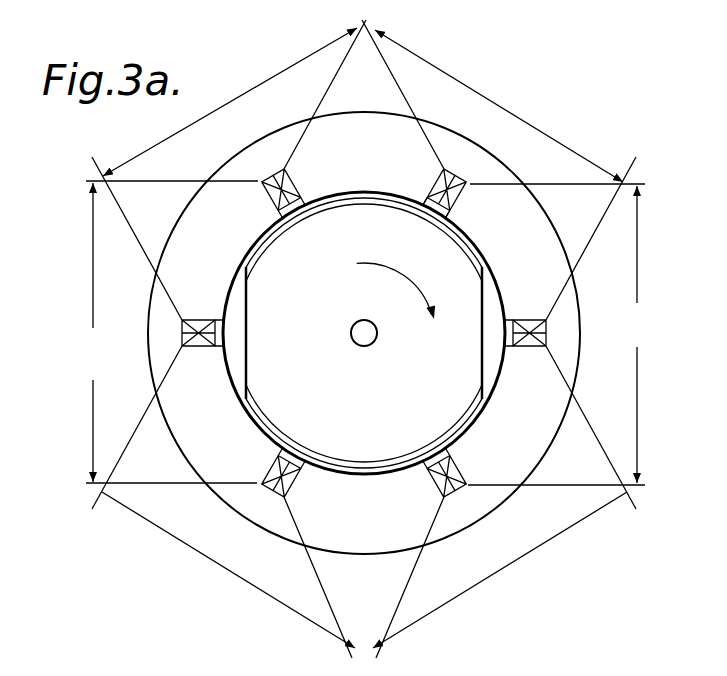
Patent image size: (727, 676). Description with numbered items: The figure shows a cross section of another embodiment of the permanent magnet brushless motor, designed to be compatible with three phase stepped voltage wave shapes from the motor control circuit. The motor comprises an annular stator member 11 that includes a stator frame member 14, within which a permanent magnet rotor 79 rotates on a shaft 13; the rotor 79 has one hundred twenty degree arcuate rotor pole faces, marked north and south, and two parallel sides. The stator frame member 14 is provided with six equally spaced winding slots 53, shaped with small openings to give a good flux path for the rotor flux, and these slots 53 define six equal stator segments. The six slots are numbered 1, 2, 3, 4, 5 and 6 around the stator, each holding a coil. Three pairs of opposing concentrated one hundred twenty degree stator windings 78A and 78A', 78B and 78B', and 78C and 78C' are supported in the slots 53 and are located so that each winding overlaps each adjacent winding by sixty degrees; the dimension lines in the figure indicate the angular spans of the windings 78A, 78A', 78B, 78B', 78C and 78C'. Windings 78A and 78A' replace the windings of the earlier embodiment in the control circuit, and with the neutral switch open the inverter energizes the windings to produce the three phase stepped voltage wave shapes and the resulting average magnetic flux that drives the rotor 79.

The first field coil 1 is at (417, 119).
The second field coil 2 is at (570, 333).
The third field coil 3 is at (421, 553).
The fourth field coil 4 is at (303, 553).
The fifth field coil 5 is at (158, 333).
The sixth field coil 6 is at (314, 119).
The annular stator member 11 is at (543, 205).
The shaft 13 is at (377, 332).
The stator frame member 14 is at (500, 170).
The winding slots 53 is at (463, 200).
The permanent magnet rotor 79 is at (255, 345).
The stator winding 78A is at (638, 334).
The stator winding 78A' is at (91, 332).
The stator winding 78B is at (500, 570).
The stator winding 78B' is at (230, 102).
The stator winding 78C is at (228, 570).
The stator winding 78C' is at (499, 106).